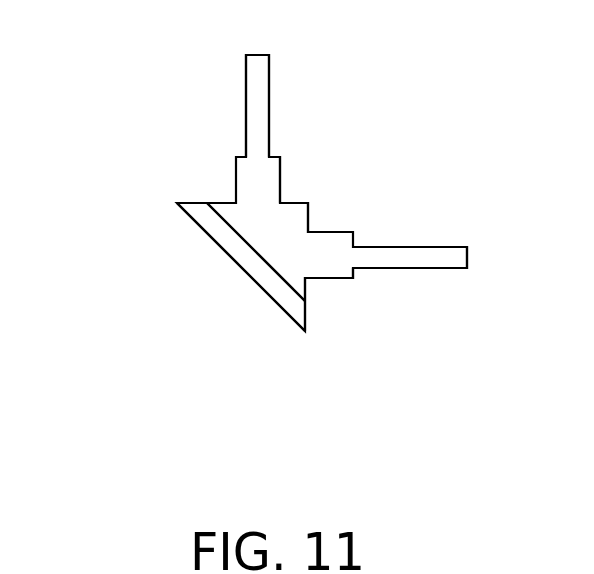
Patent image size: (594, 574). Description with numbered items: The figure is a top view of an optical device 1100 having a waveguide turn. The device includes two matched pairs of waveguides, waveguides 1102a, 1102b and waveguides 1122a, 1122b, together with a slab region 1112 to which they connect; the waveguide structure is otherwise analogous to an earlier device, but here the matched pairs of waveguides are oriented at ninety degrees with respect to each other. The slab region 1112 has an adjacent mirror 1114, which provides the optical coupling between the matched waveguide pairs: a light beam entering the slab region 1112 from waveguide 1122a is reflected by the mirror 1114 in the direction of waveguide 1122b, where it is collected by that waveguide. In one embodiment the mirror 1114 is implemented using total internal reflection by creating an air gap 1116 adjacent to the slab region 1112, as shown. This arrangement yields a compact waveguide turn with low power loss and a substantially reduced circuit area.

The optical device 1100 is at (122, 404).
The waveguide 1102a is at (447, 246).
The waveguide 1102b is at (270, 82).
The slab region 1112 is at (309, 220).
The mirror 1114 is at (250, 276).
The air gap 1116 is at (193, 202).
The waveguide 1122a is at (343, 278).
The waveguide 1122b is at (280, 175).